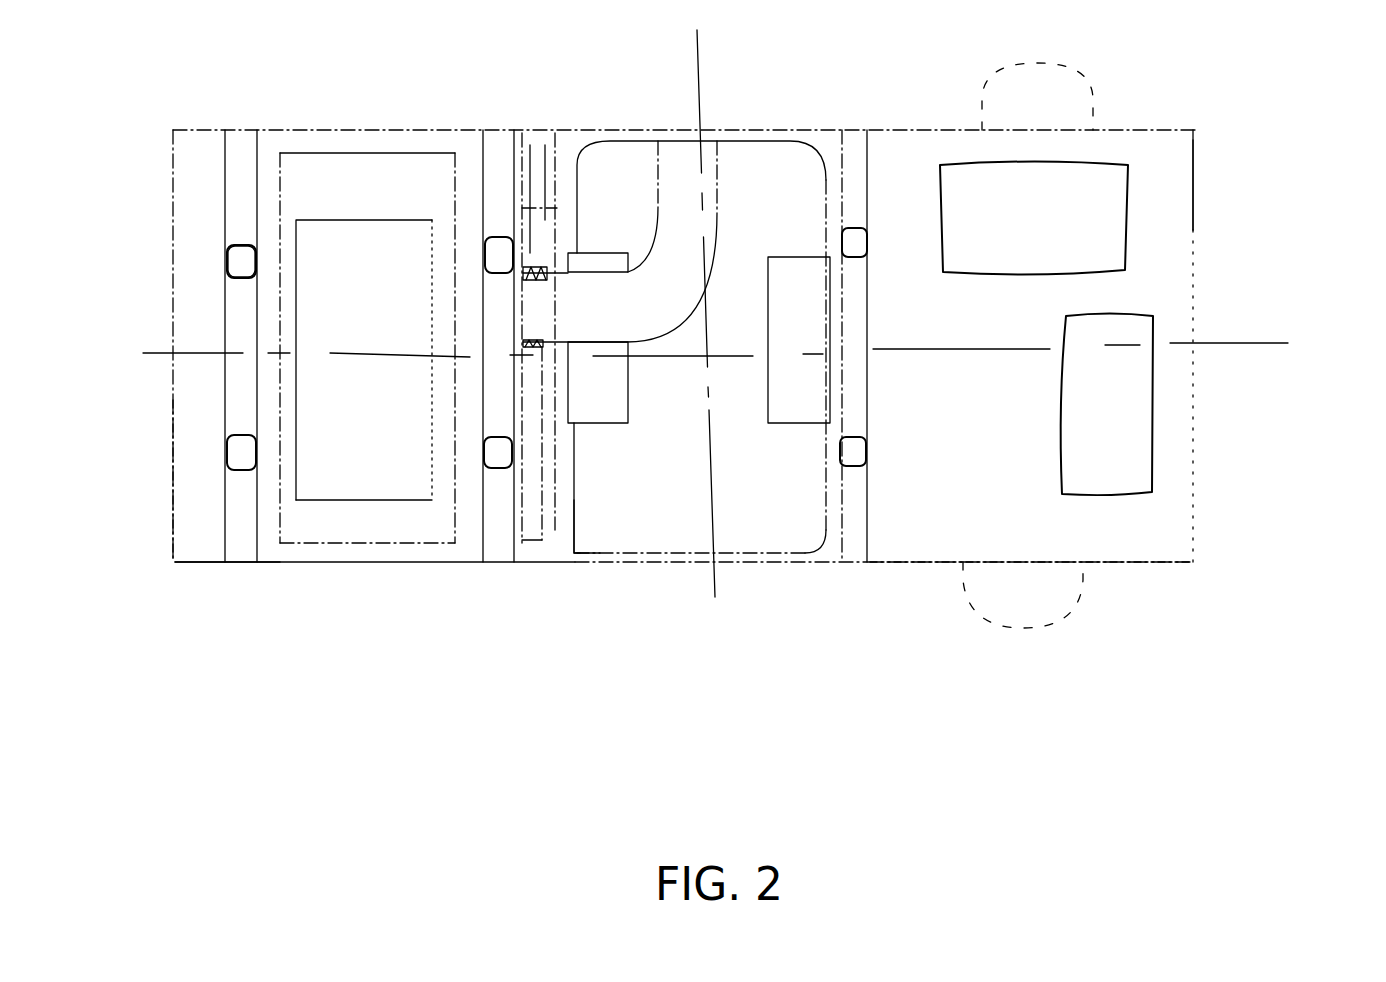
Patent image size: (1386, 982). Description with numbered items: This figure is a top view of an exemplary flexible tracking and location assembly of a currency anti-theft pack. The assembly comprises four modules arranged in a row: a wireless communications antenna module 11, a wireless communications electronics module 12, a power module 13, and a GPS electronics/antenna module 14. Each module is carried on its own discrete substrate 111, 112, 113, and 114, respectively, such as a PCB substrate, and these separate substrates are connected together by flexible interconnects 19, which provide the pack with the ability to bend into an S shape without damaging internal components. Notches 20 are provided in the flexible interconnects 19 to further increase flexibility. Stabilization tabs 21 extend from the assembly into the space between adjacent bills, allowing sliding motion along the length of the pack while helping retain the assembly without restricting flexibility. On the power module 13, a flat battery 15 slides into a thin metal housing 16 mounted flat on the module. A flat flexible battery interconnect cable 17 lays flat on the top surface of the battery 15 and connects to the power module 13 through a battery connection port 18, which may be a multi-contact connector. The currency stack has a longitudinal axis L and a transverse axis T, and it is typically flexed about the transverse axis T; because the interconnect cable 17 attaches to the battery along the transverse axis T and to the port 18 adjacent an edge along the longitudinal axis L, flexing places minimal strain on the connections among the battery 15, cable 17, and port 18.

The wireless communications antenna module 11 is at (188, 318).
The discrete substrate 111 is at (197, 560).
The discrete substrate 112 is at (342, 557).
The wireless communications electronics module 12 is at (364, 339).
The discrete substrate 113 is at (572, 145).
The power module 13 is at (565, 552).
The GPS electronics/antenna module 14 is at (1150, 558).
The discrete substrate 114 is at (1173, 190).
The battery 15 is at (811, 145).
The thin metal housing 16 is at (798, 408).
The battery interconnect cable 17 is at (690, 127).
The battery connection port 18 is at (508, 265).
The flexible interconnects 19 is at (247, 137).
The notches 20 is at (237, 247).
The stabilization tabs 21 is at (1090, 73).
The longitudinal axis L is at (759, 335).
The transverse axis T is at (715, 345).